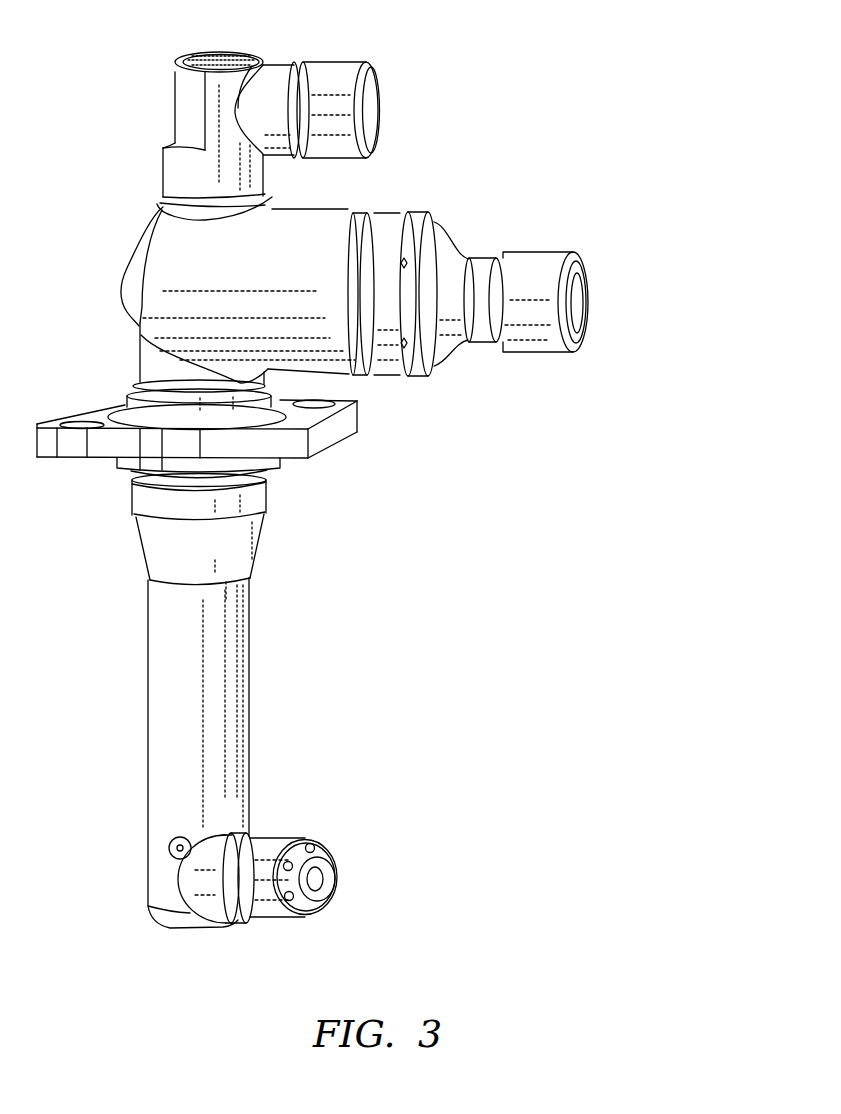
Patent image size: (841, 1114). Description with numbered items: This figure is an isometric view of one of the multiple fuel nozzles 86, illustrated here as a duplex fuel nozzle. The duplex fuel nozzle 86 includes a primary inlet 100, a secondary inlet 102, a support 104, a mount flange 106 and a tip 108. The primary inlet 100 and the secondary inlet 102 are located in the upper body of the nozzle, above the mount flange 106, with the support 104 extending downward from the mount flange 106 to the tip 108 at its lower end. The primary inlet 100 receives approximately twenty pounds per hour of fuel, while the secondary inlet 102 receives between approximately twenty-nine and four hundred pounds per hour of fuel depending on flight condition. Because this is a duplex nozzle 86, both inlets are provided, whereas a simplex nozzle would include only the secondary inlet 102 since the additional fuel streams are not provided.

The fuel nozzle 86 is at (551, 523).
The primary inlet 100 is at (380, 43).
The secondary inlet 102 is at (597, 231).
The support 104 is at (271, 659).
The mount flange 106 is at (379, 427).
The tip 108 is at (363, 854).